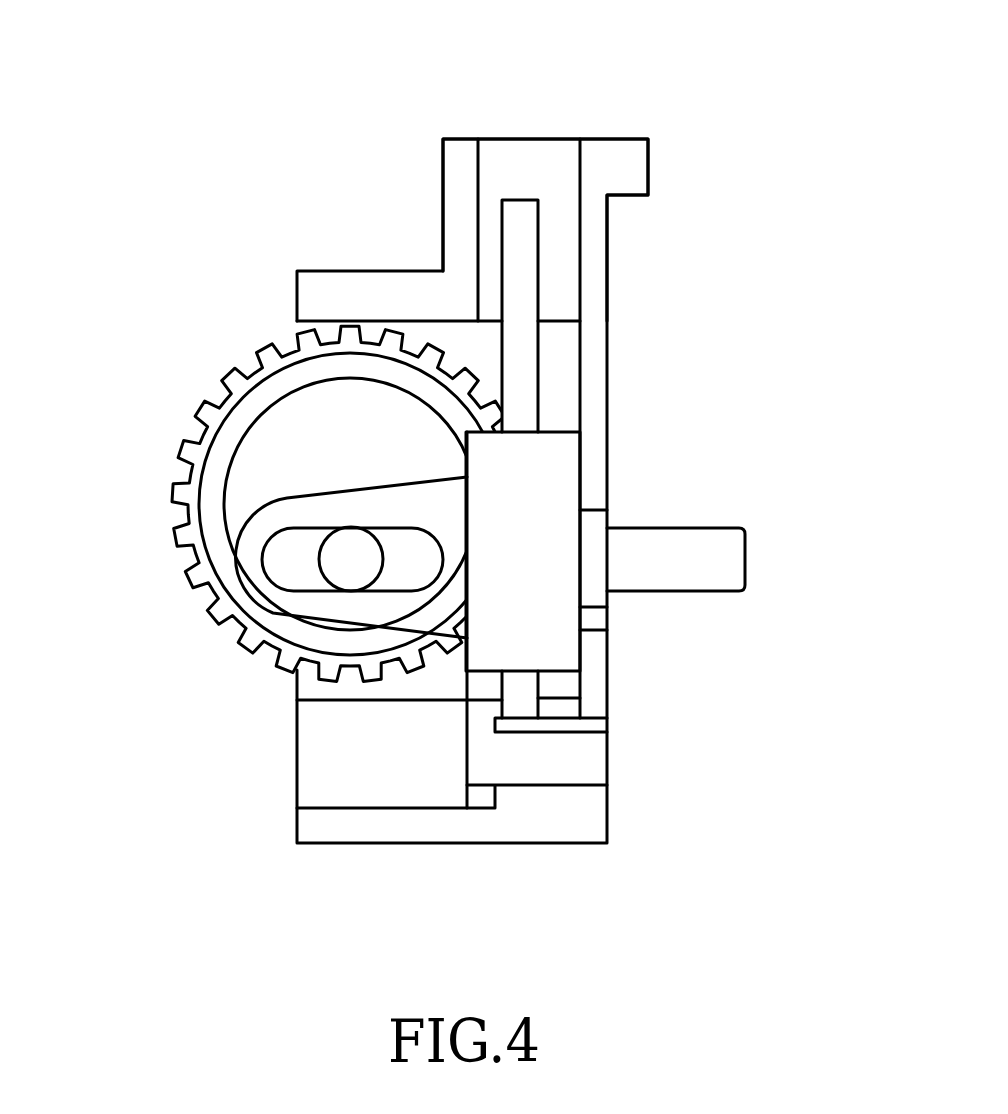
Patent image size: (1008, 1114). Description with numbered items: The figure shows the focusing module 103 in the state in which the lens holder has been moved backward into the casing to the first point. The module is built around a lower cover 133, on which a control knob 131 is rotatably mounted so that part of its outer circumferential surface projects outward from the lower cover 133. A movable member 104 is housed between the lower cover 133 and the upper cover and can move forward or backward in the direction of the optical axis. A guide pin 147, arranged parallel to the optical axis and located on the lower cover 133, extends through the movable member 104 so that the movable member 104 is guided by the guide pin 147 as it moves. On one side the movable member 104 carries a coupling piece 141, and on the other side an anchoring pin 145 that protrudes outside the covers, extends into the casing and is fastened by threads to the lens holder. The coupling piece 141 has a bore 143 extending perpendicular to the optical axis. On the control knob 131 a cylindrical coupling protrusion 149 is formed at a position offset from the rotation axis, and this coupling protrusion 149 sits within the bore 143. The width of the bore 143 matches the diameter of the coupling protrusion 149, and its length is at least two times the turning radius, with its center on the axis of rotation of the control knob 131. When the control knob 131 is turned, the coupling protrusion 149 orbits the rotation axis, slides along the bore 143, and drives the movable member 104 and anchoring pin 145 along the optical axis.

The focusing module 103 is at (228, 144).
The lower cover 133 is at (520, 157).
The guide pin 147 is at (522, 288).
The movable member 104 is at (558, 653).
The anchoring pin 145 is at (730, 560).
The control knob 131 is at (217, 407).
The coupling piece 141 is at (268, 523).
The bore 143 is at (285, 570).
The coupling protrusion 149 is at (342, 572).